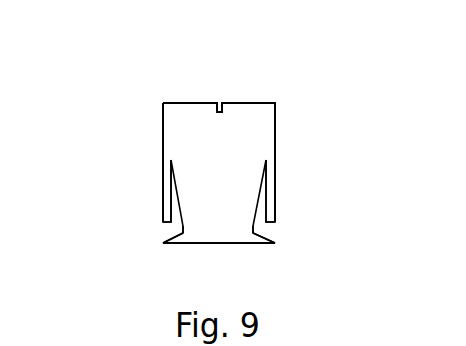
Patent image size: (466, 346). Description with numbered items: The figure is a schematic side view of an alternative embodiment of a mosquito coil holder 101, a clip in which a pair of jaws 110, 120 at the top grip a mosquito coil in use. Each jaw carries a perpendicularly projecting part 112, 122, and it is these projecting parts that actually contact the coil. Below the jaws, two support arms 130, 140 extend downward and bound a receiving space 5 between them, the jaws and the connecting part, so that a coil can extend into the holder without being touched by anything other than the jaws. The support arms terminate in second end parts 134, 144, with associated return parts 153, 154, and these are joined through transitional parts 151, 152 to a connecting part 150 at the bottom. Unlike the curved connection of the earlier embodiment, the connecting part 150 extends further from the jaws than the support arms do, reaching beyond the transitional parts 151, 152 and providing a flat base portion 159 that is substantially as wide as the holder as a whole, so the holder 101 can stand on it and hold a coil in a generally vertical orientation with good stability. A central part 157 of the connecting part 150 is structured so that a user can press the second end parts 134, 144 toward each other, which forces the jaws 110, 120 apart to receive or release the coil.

The mosquito coil holder 101 is at (213, 65).
The jaw 110 is at (192, 102).
The perpendicularly projecting part 112 is at (217, 107).
The jaw 120 is at (248, 103).
The perpendicularly projecting part 122 is at (222, 107).
The support arm 130 is at (160, 142).
The support arm 140 is at (278, 142).
The second end part 134 is at (168, 207).
The second end part 144 is at (268, 207).
The return part 153 is at (166, 192).
The return part 154 is at (268, 188).
The central part 157 is at (258, 196).
The transitional part 151 is at (165, 223).
The transitional part 152 is at (277, 223).
The flat base portion 159 is at (203, 244).
The connecting part 150 is at (244, 248).
The receiving space 5 is at (235, 212).